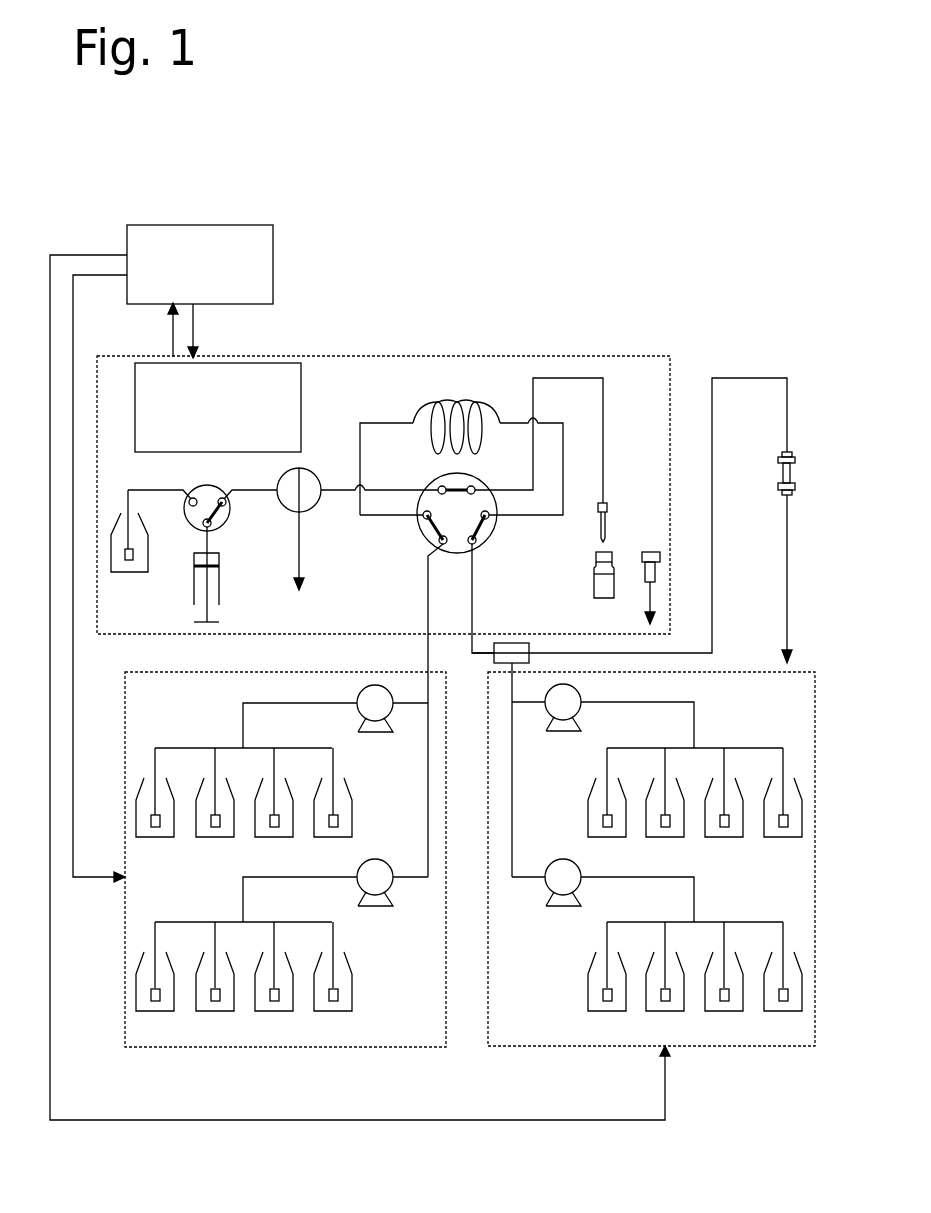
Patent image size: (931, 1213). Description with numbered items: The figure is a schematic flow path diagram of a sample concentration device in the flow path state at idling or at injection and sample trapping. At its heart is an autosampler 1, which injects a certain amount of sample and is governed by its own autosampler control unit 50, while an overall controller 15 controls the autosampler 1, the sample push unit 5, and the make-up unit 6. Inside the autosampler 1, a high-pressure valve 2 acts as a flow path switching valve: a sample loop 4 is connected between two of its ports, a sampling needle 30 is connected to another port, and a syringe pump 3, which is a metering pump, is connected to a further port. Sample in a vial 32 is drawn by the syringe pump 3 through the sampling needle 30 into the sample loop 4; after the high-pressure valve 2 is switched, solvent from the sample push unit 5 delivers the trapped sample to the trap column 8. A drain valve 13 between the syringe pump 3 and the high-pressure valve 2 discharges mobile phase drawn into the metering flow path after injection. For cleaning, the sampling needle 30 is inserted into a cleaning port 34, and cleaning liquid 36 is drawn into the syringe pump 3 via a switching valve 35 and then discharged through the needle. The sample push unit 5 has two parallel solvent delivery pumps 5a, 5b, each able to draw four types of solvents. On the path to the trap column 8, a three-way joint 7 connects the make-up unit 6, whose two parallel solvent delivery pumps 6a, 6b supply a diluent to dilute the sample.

The autosampler 1 is at (335, 357).
The controller 15 is at (247, 223).
The autosampler control unit 50 is at (302, 382).
The cleaning liquid 36 is at (112, 522).
The switching valve 35 is at (218, 497).
The syringe pump 3 is at (222, 583).
The drain valve 13 is at (308, 467).
The sample loop 4 is at (425, 403).
The high-pressure valve 2 is at (420, 538).
The sampling needle 30 is at (613, 517).
The vial 32 is at (592, 584).
The cleaning port 34 is at (652, 550).
The three-way joint 7 is at (507, 643).
The trap column 8 is at (780, 473).
The sample push unit 5 is at (315, 1047).
The solvent delivery pump 5a is at (378, 730).
The solvent delivery pump 5b is at (382, 860).
The make-up unit 6 is at (547, 1046).
The solvent delivery pump 6a is at (558, 735).
The solvent delivery pump 6b is at (557, 867).